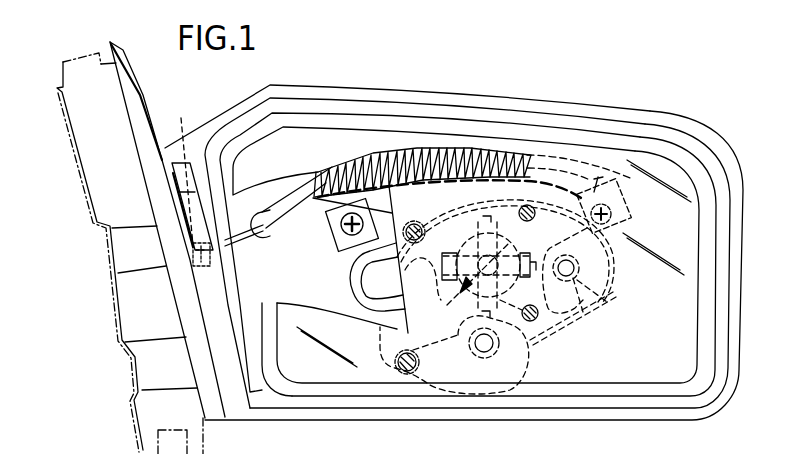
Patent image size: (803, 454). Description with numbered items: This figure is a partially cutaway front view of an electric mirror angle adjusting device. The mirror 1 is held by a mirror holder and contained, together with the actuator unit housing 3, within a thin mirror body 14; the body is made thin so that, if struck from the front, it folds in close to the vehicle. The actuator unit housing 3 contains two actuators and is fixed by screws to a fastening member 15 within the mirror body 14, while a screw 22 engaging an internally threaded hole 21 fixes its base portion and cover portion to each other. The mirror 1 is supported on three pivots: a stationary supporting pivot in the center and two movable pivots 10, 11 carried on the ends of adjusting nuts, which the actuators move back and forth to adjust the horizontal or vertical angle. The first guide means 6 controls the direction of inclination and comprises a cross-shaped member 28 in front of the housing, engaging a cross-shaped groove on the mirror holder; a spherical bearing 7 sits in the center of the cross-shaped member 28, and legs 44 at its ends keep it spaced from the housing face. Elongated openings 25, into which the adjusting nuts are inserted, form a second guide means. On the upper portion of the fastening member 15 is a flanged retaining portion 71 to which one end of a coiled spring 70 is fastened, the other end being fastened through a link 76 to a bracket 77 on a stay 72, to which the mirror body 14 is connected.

The mirror 1 is at (642, 160).
The actuator unit housing 3 is at (616, 283).
The first guide means 6 is at (468, 302).
The spherical bearing 7 is at (497, 257).
The movable pivot 10 is at (580, 312).
The movable pivot 11 is at (493, 360).
The mirror body 14 is at (540, 115).
The fastening member 15 is at (343, 242).
The internally threaded hole 21 is at (412, 233).
The screw 22 is at (414, 233).
The opening 25 is at (603, 298).
The cross-shaped member 28 is at (461, 281).
The leg 44 is at (533, 337).
The coiled spring 70 is at (419, 155).
The retaining portion 71 is at (322, 205).
The stay 72 is at (136, 108).
The link 76 is at (240, 238).
The bracket 77 is at (135, 253).